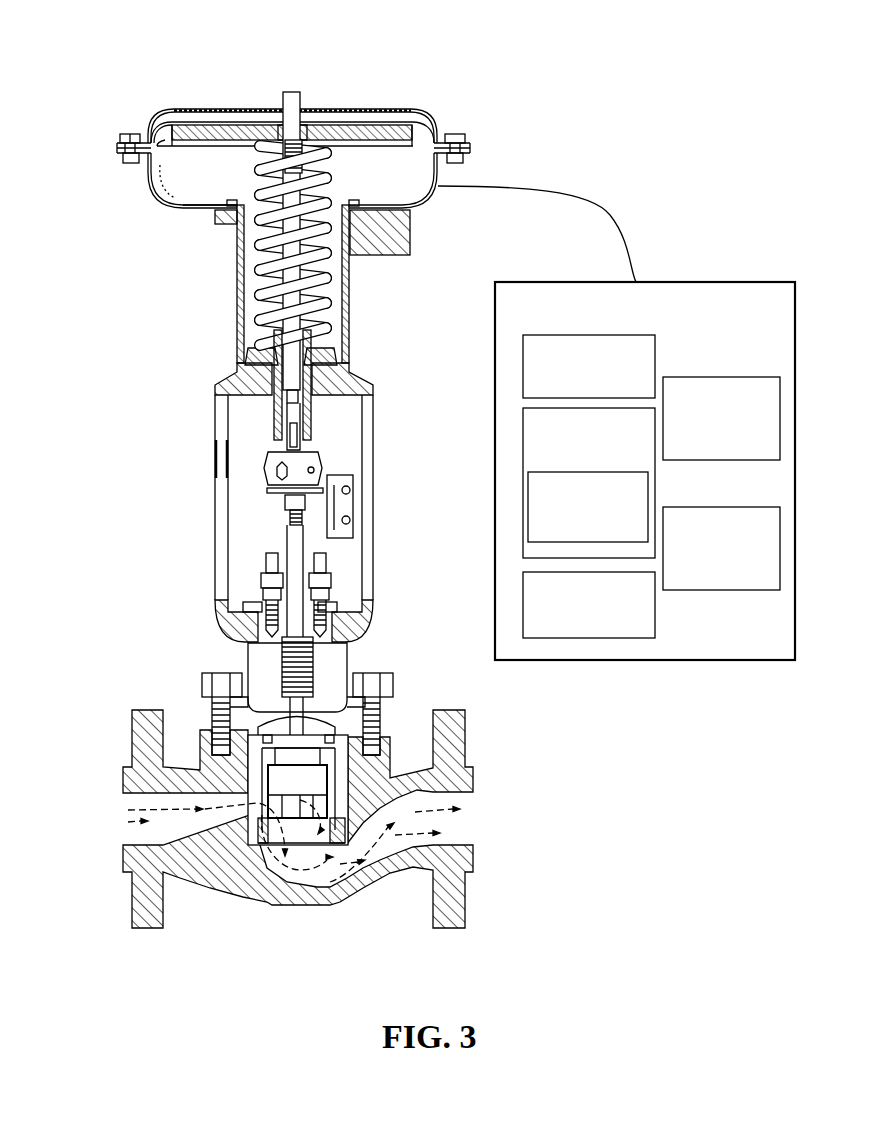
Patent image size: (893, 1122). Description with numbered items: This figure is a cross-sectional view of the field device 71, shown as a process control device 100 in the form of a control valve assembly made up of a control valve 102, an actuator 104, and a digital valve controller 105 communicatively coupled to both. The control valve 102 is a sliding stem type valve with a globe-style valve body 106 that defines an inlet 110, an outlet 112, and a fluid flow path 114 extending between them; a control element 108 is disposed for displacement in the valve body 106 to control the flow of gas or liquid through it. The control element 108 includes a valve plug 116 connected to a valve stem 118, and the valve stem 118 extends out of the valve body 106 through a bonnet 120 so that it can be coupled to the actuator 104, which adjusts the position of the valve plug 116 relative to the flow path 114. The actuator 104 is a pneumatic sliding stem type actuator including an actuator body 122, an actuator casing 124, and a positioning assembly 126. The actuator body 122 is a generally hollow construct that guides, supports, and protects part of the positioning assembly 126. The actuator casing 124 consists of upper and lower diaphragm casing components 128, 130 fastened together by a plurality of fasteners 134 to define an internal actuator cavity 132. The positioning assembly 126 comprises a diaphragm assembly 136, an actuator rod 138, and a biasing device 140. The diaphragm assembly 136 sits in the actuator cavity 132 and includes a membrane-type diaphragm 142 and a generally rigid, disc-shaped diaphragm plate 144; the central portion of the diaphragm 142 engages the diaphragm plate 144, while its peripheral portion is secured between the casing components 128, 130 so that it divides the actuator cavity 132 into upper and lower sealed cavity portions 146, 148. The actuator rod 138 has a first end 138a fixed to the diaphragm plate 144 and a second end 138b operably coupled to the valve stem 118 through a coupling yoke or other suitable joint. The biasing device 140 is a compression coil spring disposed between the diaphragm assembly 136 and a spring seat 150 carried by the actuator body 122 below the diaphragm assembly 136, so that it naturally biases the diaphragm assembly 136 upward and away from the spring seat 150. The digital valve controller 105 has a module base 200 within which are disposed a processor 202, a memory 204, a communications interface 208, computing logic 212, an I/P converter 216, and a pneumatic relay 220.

The field device 71 is at (299, 56).
The process control device 100 is at (300, 480).
The control valve 102 is at (122, 899).
The actuator 104 is at (205, 560).
The digital valve controller 105 is at (674, 239).
The valve body 106 is at (457, 738).
The control element 108 is at (346, 728).
The inlet 110 is at (123, 813).
The outlet 112 is at (473, 830).
The fluid flow path 114 is at (383, 847).
The valve plug 116 is at (350, 785).
The valve stem 118 is at (298, 713).
The bonnet 120 is at (338, 657).
The actuator body 122 is at (392, 599).
The actuator casing 124 is at (436, 200).
The positioning assembly 126 is at (336, 189).
The upper diaphragm casing component 128 is at (405, 111).
The lower diaphragm casing component 130 is at (140, 170).
The actuator cavity 132 is at (183, 157).
The fasteners 134 is at (132, 130).
The diaphragm assembly 136 is at (329, 130).
The actuator rod 138 is at (277, 381).
The first end of actuator rod 138a is at (292, 185).
The second end of actuator rod 138b is at (295, 415).
The biasing device 140 is at (343, 293).
The diaphragm 142 is at (190, 184).
The diaphragm plate 144 is at (230, 141).
The upper sealed cavity portion 146 is at (197, 123).
The lower sealed cavity portion 148 is at (200, 183).
The spring seat 150 is at (334, 351).
The module base 200 is at (645, 471).
The processor 202 is at (589, 366).
The memory 204 is at (589, 483).
The communications interface 208 is at (589, 605).
The computing logic 212 is at (588, 507).
The I/P converter 216 is at (721, 418).
The pneumatic relay 220 is at (721, 548).